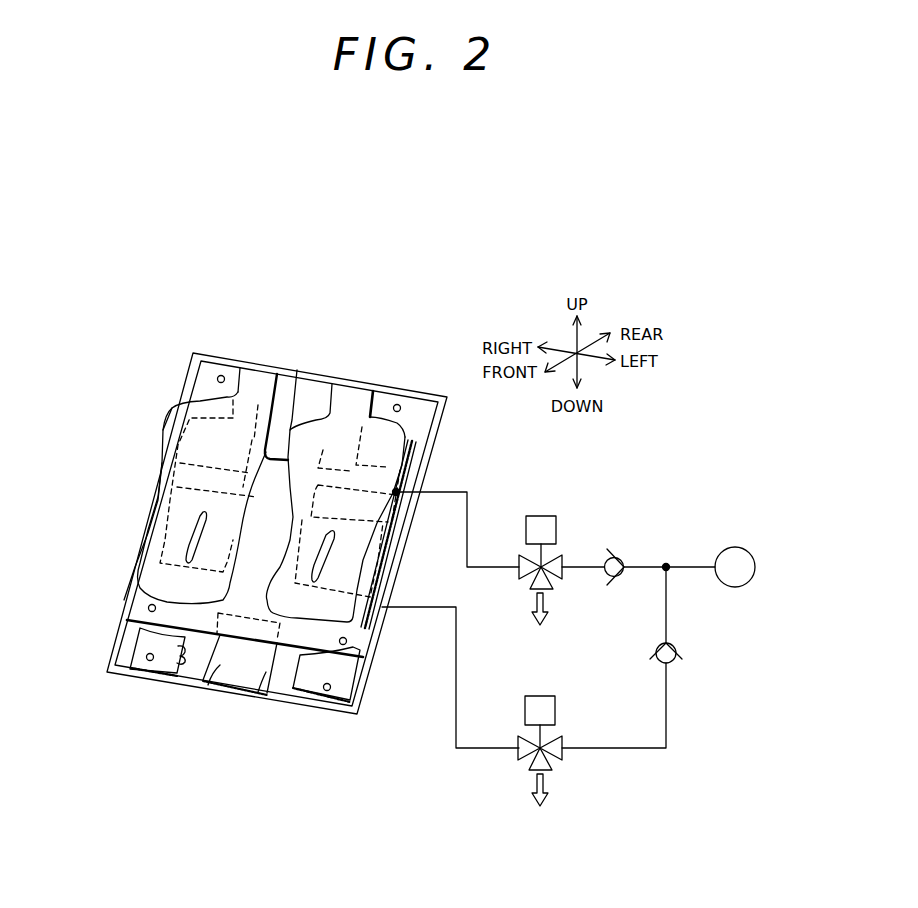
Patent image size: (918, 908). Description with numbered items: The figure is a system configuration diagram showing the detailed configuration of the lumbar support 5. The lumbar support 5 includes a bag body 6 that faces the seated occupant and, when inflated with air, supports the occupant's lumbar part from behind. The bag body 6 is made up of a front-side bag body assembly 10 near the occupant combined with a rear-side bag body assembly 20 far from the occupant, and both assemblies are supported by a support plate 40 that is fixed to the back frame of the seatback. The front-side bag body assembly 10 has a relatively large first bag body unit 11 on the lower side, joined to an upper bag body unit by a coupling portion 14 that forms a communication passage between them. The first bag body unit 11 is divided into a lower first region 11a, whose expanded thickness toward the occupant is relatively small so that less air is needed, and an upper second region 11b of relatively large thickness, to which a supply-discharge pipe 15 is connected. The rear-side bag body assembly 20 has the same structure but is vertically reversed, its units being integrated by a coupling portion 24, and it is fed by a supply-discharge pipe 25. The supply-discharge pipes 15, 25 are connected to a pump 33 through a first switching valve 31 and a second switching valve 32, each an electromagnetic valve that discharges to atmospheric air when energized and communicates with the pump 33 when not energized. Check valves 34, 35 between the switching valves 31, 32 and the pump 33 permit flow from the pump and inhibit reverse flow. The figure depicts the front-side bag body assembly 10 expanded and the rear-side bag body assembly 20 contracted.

The lumbar support 5 is at (335, 302).
The bag body 6 is at (95, 403).
The front-side bag body assembly 10 is at (157, 437).
The first bag body unit 11 is at (159, 477).
The first region 11a is at (157, 520).
The second region 11b is at (168, 410).
The coupling portion 14 is at (241, 371).
The supply-discharge pipe 15 is at (400, 490).
The rear-side bag body assembly 20 is at (143, 638).
The coupling portion 24 is at (220, 665).
The supply-discharge pipe 25 is at (374, 652).
The first switching valve 31 is at (566, 585).
The second switching valve 32 is at (564, 769).
The pump 33 is at (735, 546).
The check valve 34 is at (621, 545).
The check valve 35 is at (684, 640).
The support plate 40 is at (397, 390).